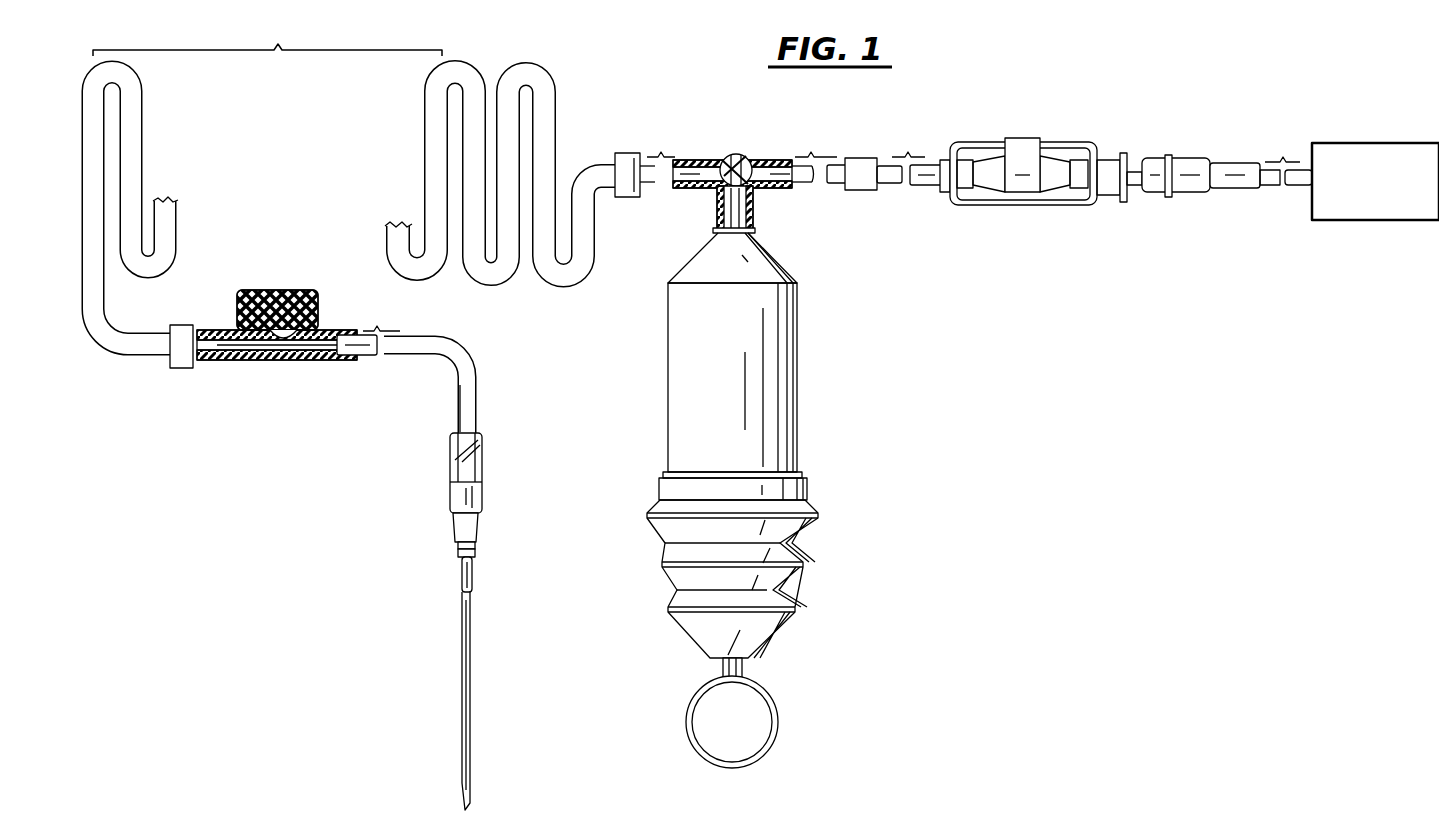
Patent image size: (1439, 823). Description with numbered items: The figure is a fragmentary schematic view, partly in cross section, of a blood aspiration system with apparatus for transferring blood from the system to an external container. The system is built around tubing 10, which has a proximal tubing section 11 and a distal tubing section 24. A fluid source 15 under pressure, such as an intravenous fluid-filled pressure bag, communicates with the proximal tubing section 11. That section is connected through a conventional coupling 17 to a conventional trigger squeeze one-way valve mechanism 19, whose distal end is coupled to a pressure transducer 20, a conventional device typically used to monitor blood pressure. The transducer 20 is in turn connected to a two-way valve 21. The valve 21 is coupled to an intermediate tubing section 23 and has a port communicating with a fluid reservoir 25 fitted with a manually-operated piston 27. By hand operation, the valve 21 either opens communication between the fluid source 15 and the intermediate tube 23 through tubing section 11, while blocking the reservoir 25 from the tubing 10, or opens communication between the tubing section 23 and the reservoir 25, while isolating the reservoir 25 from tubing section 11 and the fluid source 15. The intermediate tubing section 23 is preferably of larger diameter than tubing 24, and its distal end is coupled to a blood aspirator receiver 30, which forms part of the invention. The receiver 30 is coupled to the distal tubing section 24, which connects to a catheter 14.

The tubing 10 is at (944, 397).
The proximal tubing section 11 is at (1041, 321).
The catheter 14 is at (456, 572).
The fluid source 15 is at (1321, 221).
The coupling 17 is at (1157, 196).
The trigger squeeze one-way valve mechanism 19 is at (983, 205).
The pressure transducer 20 is at (858, 191).
The two-way valve 21 is at (737, 153).
The intermediate tubing section 23 is at (602, 280).
The distal tubing section 24 is at (476, 412).
The fluid reservoir 25 is at (797, 452).
The manually-operated piston 27 is at (749, 672).
The blood aspirator receiver 30 is at (318, 292).